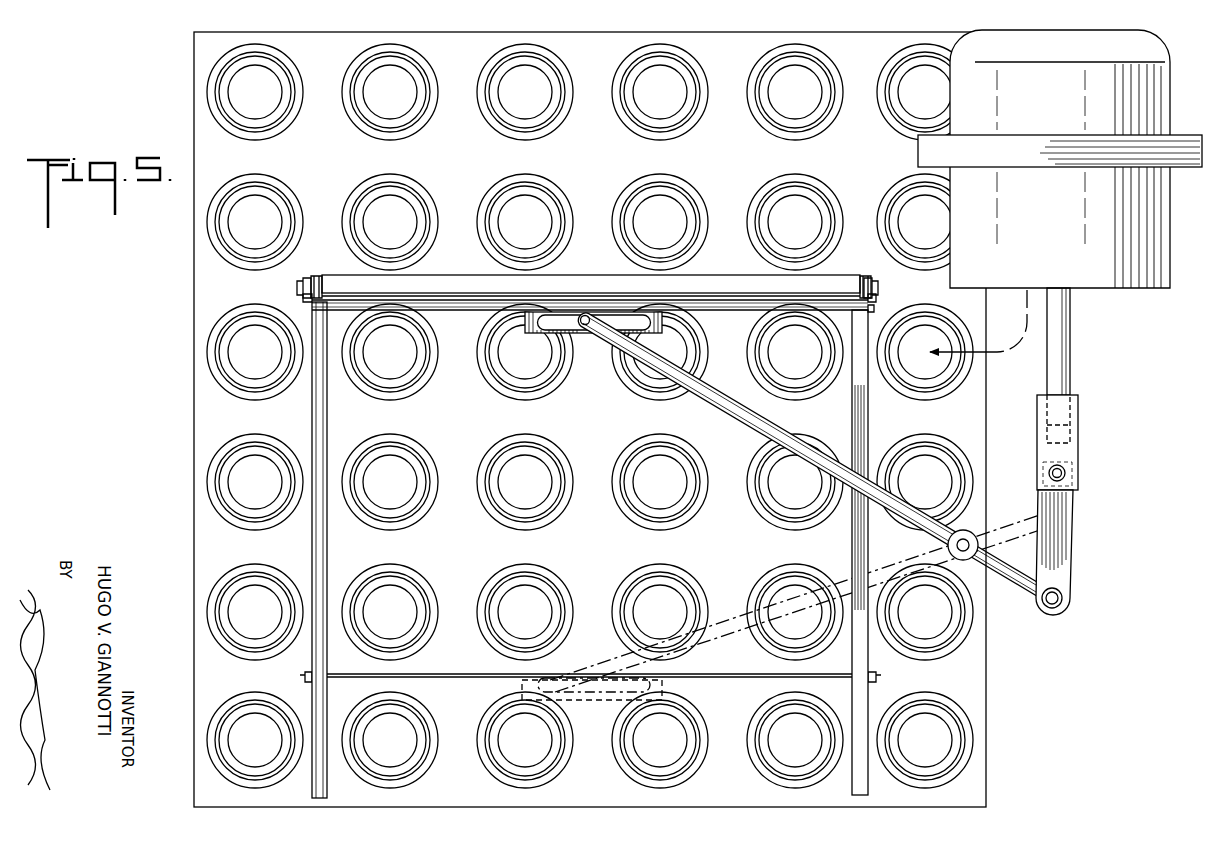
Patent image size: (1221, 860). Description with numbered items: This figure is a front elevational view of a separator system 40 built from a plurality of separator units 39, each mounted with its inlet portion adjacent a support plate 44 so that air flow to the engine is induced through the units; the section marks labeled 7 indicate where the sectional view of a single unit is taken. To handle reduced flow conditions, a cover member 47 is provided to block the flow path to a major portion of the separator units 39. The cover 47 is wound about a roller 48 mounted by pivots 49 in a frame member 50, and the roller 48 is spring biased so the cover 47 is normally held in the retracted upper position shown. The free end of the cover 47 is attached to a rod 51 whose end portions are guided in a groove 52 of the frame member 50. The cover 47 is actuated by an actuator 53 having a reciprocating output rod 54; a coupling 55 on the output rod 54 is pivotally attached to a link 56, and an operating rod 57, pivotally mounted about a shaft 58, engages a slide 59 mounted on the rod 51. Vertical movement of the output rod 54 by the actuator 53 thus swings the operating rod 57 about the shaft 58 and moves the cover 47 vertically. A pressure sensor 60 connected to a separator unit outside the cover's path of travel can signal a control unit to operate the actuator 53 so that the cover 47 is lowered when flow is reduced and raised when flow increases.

The section line 7- 7 is at (520, 427).
The separator unit 39 is at (645, 785).
The separator system 40 is at (1008, 689).
The support plate 44 is at (462, 795).
The cover member 47 is at (722, 298).
The roller 48 is at (318, 277).
The pivot 49 is at (297, 287).
The frame member 50 is at (303, 298).
The rod 51 is at (873, 308).
The groove 52 is at (853, 360).
The actuator 53 is at (1070, 170).
The output rod 54 is at (1072, 371).
The coupling 55 is at (1080, 427).
The link 56 is at (1072, 560).
The operating rod 57 is at (758, 424).
The shaft 58 is at (972, 535).
The slide 59 is at (605, 316).
The pressure sensor 60 is at (997, 356).